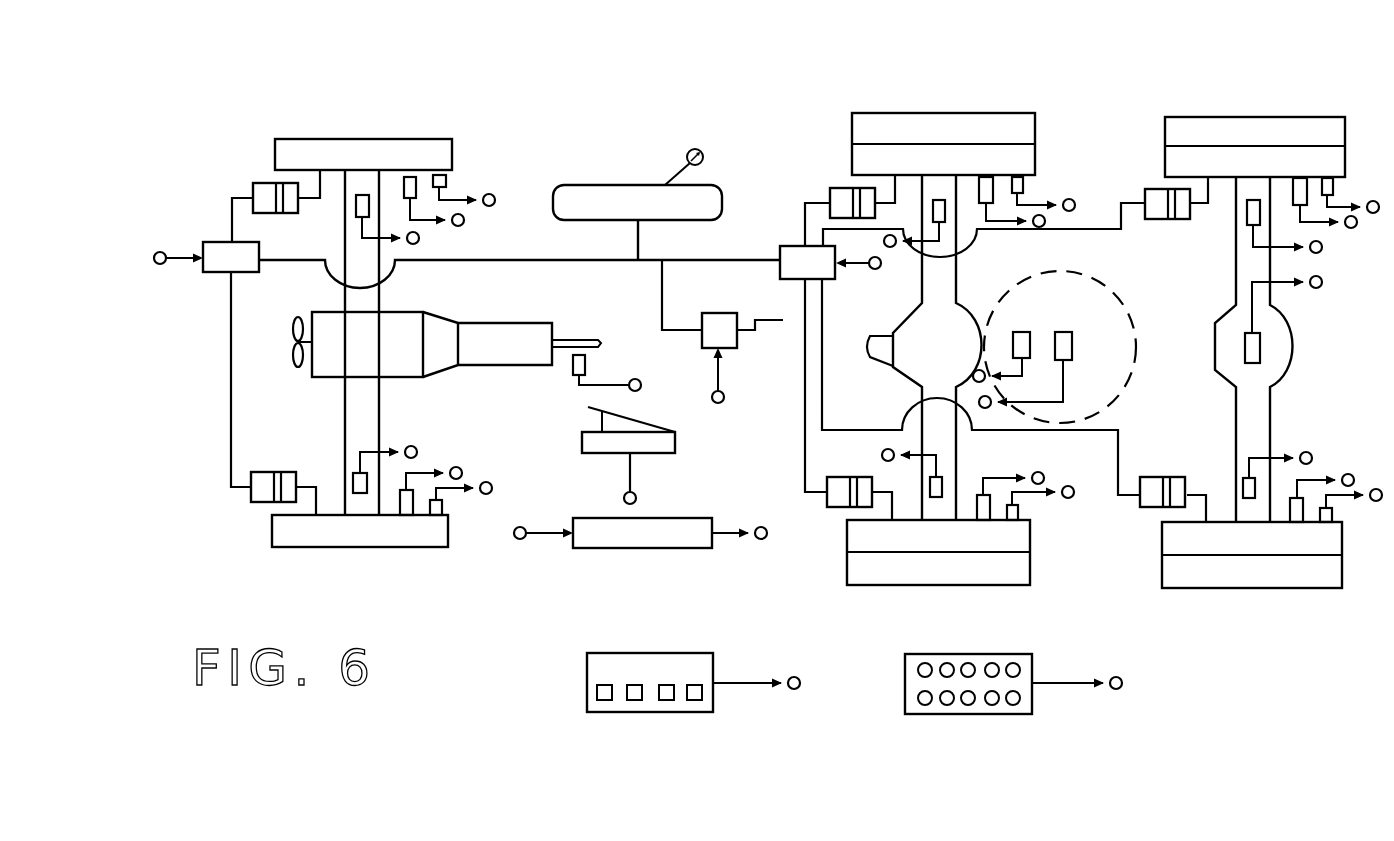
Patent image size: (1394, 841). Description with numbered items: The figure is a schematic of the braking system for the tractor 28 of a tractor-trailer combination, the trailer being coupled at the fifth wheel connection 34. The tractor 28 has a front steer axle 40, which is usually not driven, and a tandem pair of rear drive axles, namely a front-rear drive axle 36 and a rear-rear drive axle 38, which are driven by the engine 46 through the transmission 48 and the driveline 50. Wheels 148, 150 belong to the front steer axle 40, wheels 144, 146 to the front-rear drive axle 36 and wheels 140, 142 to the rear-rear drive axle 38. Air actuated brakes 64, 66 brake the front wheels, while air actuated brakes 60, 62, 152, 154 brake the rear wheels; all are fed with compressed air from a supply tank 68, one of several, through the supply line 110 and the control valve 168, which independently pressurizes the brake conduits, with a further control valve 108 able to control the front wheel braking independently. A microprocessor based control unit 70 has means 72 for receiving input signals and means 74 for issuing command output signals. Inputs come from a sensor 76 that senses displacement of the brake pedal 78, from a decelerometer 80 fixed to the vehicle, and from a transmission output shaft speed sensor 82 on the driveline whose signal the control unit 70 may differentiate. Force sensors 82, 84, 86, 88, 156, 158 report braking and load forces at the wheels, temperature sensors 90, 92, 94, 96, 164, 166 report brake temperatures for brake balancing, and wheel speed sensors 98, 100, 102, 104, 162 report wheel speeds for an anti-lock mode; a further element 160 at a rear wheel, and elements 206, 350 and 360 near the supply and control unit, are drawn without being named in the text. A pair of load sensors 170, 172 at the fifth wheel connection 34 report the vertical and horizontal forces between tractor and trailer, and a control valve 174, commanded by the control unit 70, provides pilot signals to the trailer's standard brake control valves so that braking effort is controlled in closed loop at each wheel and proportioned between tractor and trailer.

The tractor 28 is at (708, 96).
The fifth wheel connection 34 is at (1113, 403).
The front-rear drive axle 36 is at (918, 100).
The rear-rear drive axle 38 is at (1202, 107).
The front steer axle 40 is at (398, 108).
The engine 46 is at (388, 363).
The transmission 48 is at (492, 347).
The driveline 50 is at (583, 340).
The air actuated brake 60 is at (838, 188).
The air actuated brake 62 is at (850, 477).
The air actuated brake 64 is at (288, 213).
The air actuated brake 66 is at (262, 472).
The supply tank 68 is at (632, 200).
The control unit 70 is at (683, 540).
The input receiving means 72 is at (538, 537).
The command output means 74 is at (739, 513).
The sensor 76 is at (677, 440).
The brake pedal 78 is at (625, 415).
The decelerometer 80 is at (1257, 350).
The transmission output shaft speed sensor 82 is at (585, 365).
The force sensor 84 is at (936, 497).
The force sensor 86 is at (366, 195).
The force sensor 88 is at (362, 486).
The temperature sensor 90 is at (1023, 186).
The temperature sensor 92 is at (1018, 512).
The temperature sensor 94 is at (447, 181).
The temperature sensor 96 is at (443, 505).
The wheel speed sensor 98 is at (986, 195).
The wheel speed sensor 100 is at (983, 520).
The wheel speed sensor 102 is at (410, 177).
The wheel speed sensor 104 is at (406, 510).
The control valve 108 is at (220, 272).
The supply line 110 is at (567, 259).
The wheel 140 is at (1303, 135).
The wheel 142 is at (1212, 570).
The wheel 144 is at (978, 132).
The wheel 146 is at (900, 565).
The wheel 148 is at (300, 156).
The wheel 150 is at (310, 533).
The air actuated brake 152 is at (1152, 219).
The air actuated brake 154 is at (1152, 477).
The force sensor 156 is at (1253, 200).
The force sensor 158 is at (1249, 498).
The flow sensor 160 is at (1305, 195).
The wheel speed sensor 162 is at (1297, 522).
The temperature sensor 164 is at (1333, 189).
The temperature sensor 166 is at (1332, 513).
The control valve 168 is at (785, 246).
The load sensor 170 is at (1063, 332).
The load sensor 172 is at (1022, 332).
The control valve 174 is at (718, 313).
The fuel supply line 206 is at (767, 322).
The digital display panel 350 is at (575, 683).
The indicator lamp panel 360 is at (895, 683).